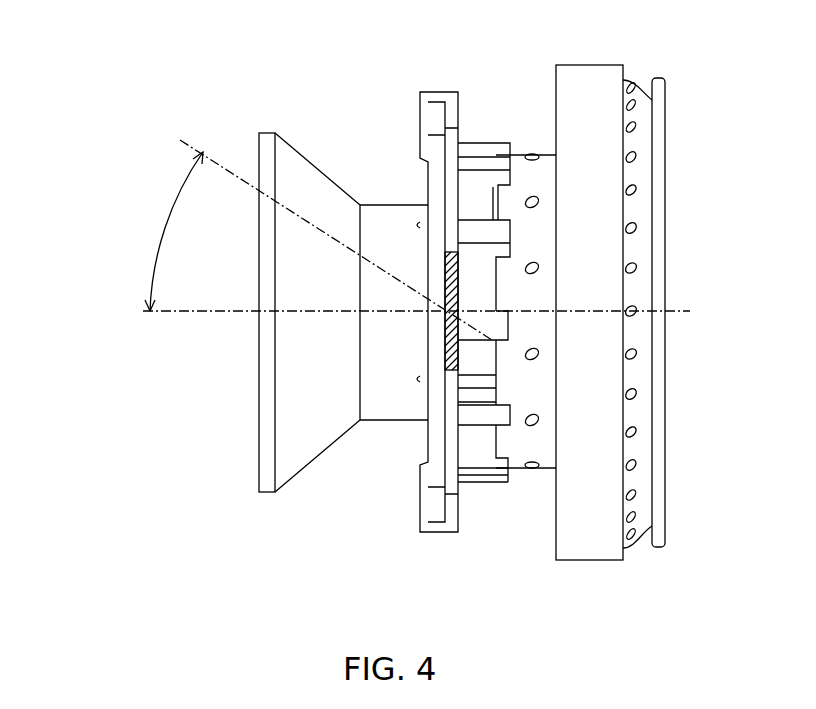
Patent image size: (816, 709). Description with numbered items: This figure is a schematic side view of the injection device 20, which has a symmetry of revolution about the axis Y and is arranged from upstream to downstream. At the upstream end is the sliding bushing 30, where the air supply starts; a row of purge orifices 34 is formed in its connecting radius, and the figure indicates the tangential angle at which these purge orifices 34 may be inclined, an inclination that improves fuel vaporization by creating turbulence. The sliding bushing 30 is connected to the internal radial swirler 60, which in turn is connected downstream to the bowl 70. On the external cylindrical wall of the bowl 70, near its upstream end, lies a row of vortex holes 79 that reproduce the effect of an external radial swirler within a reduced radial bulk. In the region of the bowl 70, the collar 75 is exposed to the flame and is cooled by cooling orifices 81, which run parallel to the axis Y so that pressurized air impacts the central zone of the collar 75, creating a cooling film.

The injection device 20 is at (193, 397).
The sliding bushing 30 is at (362, 458).
The purge orifices 34 is at (427, 225).
The internal radial swirler 60 is at (485, 140).
The bowl 70 is at (591, 498).
The collar 75 is at (657, 510).
The vortex holes 79 is at (531, 197).
The cooling orifices 81 is at (636, 277).